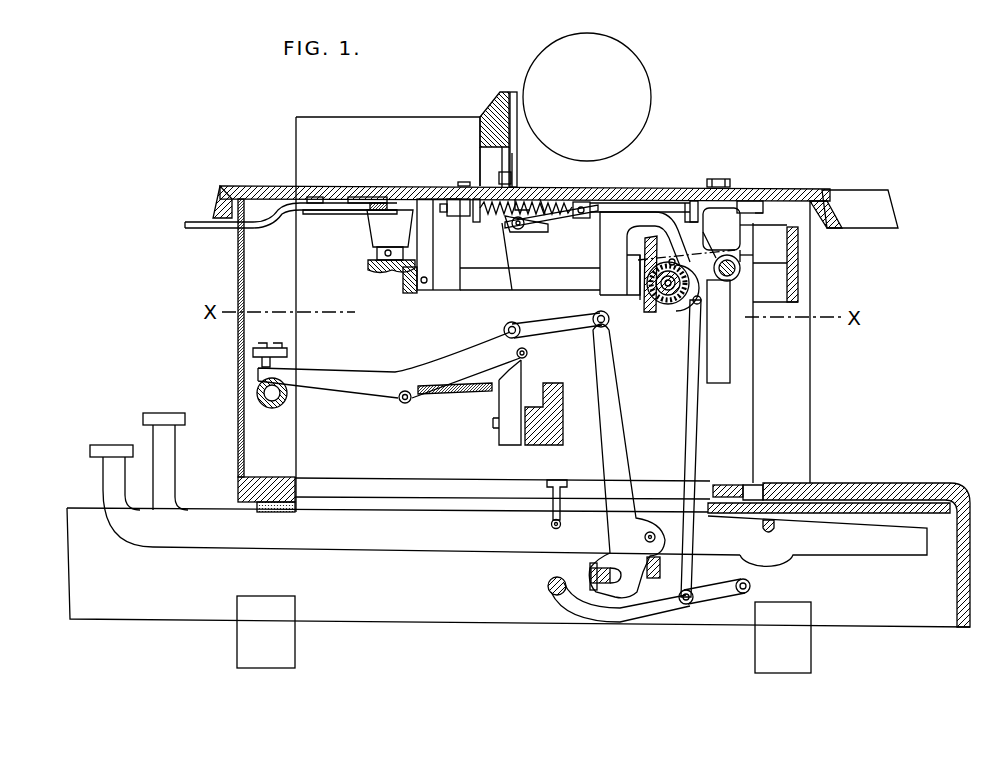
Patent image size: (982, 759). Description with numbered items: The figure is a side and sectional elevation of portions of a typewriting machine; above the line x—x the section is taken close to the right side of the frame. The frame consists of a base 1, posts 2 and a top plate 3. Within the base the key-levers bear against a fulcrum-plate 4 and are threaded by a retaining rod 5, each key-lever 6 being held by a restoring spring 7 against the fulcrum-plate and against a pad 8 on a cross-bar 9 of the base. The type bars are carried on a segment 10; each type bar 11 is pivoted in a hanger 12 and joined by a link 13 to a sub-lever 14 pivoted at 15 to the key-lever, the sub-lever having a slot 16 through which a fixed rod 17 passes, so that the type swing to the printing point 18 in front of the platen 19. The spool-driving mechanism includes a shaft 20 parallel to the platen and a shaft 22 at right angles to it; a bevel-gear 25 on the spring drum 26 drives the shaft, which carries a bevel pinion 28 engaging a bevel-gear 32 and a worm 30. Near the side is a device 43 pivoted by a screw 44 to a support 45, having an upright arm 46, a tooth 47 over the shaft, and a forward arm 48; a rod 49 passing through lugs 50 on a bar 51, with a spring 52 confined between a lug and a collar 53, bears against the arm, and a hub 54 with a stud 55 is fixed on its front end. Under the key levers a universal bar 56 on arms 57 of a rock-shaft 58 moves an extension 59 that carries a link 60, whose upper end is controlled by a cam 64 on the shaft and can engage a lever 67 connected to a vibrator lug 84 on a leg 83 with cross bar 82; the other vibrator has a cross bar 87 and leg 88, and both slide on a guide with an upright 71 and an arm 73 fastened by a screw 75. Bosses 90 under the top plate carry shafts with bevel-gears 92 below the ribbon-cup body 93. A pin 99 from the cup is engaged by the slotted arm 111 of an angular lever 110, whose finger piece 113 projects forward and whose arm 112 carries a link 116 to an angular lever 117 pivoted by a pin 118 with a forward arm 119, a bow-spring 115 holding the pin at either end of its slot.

The base 1 is at (431, 615).
The posts 2 is at (296, 418).
The top plate 3 is at (842, 196).
The fulcrum-plate 4 is at (893, 518).
The retaining rod 5 is at (768, 534).
The key-lever 6 is at (118, 482).
The restoring spring 7 is at (636, 482).
The pad 8 is at (284, 512).
The cross-bar 9 is at (292, 481).
The segment 10 is at (553, 445).
The type bar 11 is at (398, 378).
The hanger 12 is at (521, 378).
The link 13 is at (563, 321).
The sub-lever 14 is at (612, 365).
The pivot 15 is at (655, 532).
The slot 16 is at (608, 569).
The fixed rod 17 is at (597, 567).
The printing point 18 is at (517, 95).
The platen 19 is at (649, 82).
The shaft 20 is at (672, 299).
The shaft 22 is at (527, 278).
The bevel-gear 25 is at (699, 305).
The spring drum 26 is at (717, 331).
The bevel pinion 28 is at (669, 306).
The worm 30 is at (650, 288).
The bevel-gear 32 is at (645, 303).
The device 43 is at (734, 259).
The screw 44 is at (728, 282).
The support 45 is at (721, 235).
The upright arm 46 is at (740, 231).
The tooth 47 is at (674, 260).
The arm 48 is at (612, 223).
The rod 49 is at (679, 206).
The lugs 50 is at (480, 213).
The bar 51 is at (624, 203).
The spring 52 is at (550, 203).
The collar 53 is at (586, 205).
The hub 54 is at (456, 215).
The stud 55 is at (466, 183).
The universal bar 56 is at (660, 567).
The arms 57 is at (614, 612).
The rock-shaft 58 is at (563, 593).
The extension 59 is at (714, 590).
The link 60 is at (698, 433).
The cam 64 is at (682, 306).
The lever 67 is at (556, 218).
The upright 71 is at (513, 157).
The arm 73 is at (520, 200).
The screw 75 is at (545, 198).
The cross bar 82 is at (499, 178).
The leg 83 is at (515, 230).
The lug 84 is at (512, 290).
The cross bar 87 is at (506, 152).
The leg 88 is at (532, 223).
The hubs or bosses 90 is at (372, 224).
The bevel-gears 92 is at (380, 271).
The oblong body 93 is at (296, 140).
The pin 99 is at (380, 210).
The angular lever 110 is at (265, 226).
The arm 111 is at (355, 197).
The arm 112 is at (290, 208).
The finger piece 113 is at (190, 229).
The bow-spring 115 is at (318, 197).
The link 116 is at (328, 214).
The angular lever 117 is at (748, 201).
The pin 118 is at (762, 203).
The arm 119 is at (722, 179).